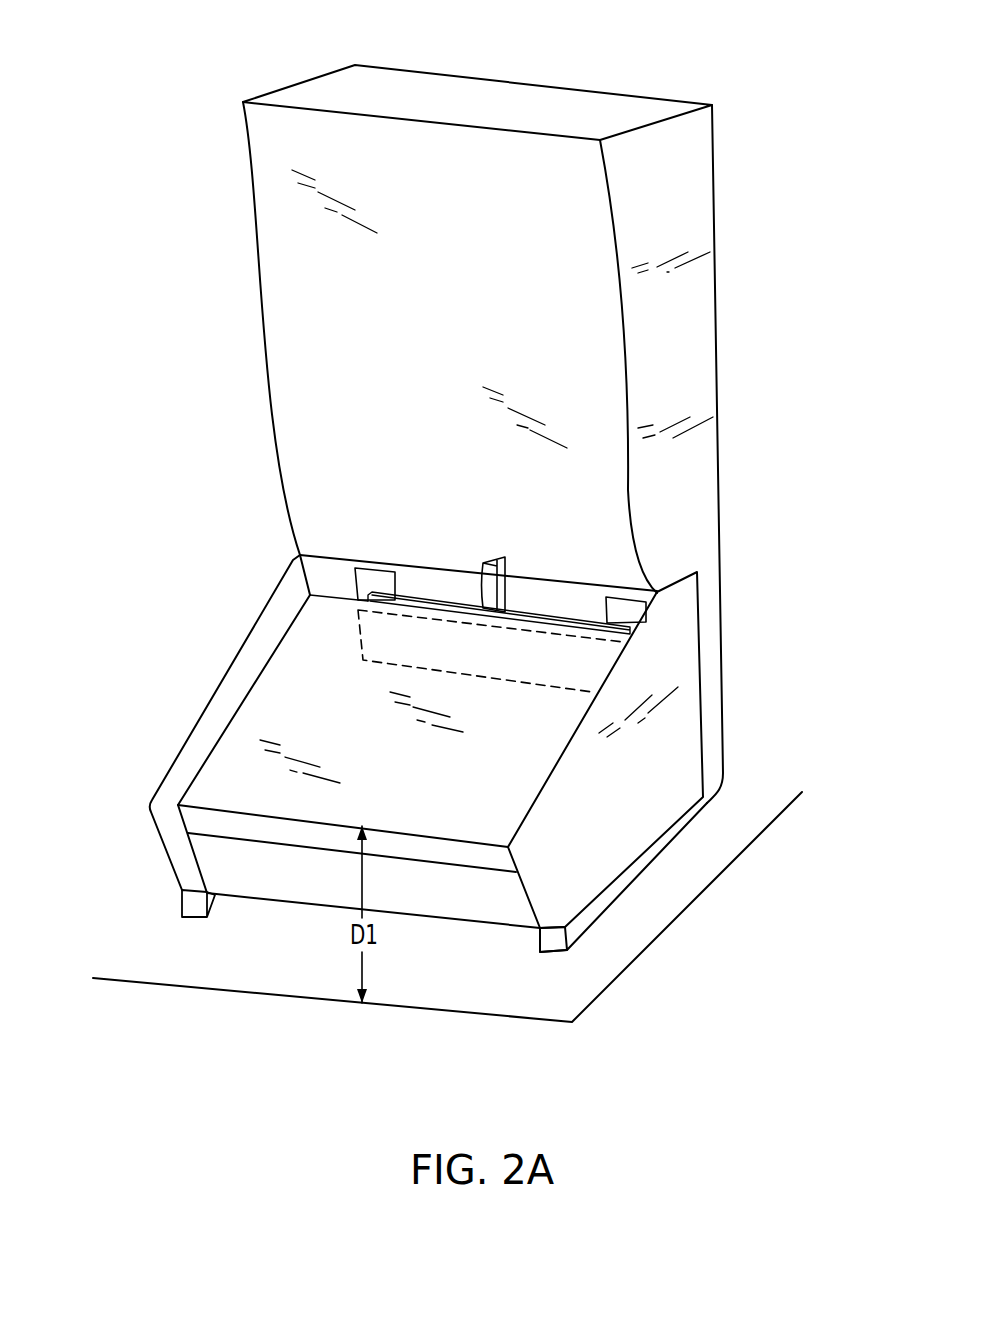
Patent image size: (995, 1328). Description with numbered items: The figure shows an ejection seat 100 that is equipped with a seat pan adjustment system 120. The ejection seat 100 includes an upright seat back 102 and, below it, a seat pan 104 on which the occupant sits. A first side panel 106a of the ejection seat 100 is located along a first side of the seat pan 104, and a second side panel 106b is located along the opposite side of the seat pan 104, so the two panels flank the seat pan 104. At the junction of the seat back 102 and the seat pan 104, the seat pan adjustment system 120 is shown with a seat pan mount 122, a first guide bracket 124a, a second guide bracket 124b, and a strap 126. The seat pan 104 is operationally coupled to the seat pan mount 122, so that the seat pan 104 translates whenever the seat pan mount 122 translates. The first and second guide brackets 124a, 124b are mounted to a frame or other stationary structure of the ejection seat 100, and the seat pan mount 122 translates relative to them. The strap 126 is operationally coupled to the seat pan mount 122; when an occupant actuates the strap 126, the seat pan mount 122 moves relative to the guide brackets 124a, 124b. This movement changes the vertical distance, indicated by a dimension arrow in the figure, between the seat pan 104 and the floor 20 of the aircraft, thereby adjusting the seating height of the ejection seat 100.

The ejection seat 100 is at (162, 100).
The seat back 102 is at (483, 434).
The seat pan 104 is at (417, 760).
The first side panel 106a is at (623, 762).
The second side panel 106b is at (218, 682).
The seat pan adjustment system 120 is at (344, 544).
The seat pan mount 122 is at (532, 660).
The first guide bracket 124a is at (382, 588).
The second guide bracket 124b is at (618, 615).
The strap 126 is at (497, 570).
The floor 20 is at (447, 907).